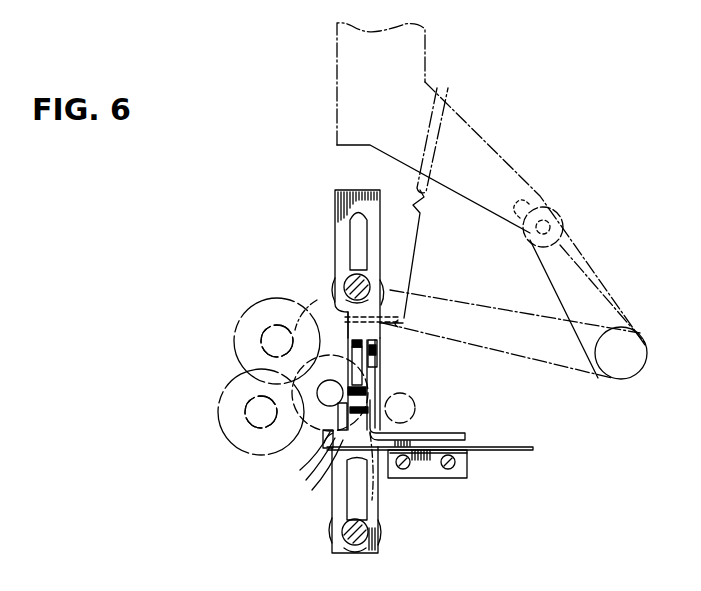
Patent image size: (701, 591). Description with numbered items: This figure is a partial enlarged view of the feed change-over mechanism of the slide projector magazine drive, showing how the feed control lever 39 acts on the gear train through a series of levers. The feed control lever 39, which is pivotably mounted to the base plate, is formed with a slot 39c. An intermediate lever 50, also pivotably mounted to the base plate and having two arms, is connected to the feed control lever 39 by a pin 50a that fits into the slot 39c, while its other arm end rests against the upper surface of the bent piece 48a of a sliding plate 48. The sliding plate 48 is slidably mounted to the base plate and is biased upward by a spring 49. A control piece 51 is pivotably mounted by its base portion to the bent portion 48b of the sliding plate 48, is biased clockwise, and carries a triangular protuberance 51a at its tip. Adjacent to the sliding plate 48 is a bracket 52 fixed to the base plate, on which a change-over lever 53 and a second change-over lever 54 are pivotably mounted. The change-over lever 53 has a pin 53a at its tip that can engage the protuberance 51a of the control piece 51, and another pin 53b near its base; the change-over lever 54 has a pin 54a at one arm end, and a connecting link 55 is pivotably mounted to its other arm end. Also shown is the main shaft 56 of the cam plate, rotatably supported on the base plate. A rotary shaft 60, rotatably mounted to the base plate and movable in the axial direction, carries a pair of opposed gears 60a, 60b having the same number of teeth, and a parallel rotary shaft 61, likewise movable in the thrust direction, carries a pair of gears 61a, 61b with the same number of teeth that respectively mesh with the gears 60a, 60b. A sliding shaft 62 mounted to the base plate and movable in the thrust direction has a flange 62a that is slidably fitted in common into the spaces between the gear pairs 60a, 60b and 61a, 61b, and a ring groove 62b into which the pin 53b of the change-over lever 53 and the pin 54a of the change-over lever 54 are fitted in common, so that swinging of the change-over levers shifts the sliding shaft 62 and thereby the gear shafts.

The feed control lever 39 is at (493, 156).
The slot 39c is at (527, 212).
The sliding plate 48 is at (334, 193).
The bent piece 48a is at (396, 324).
The bent portion 48b is at (370, 492).
The spring 49 is at (405, 262).
The intermediate lever 50 is at (580, 355).
The pin 50a is at (541, 230).
The control piece 51 is at (366, 470).
The triangular protuberance 51a is at (347, 337).
The bracket 52 is at (380, 350).
The change-over lever 53 is at (385, 364).
The pin 53a is at (386, 393).
The pin 53b is at (385, 373).
The change-over lever 54 is at (412, 463).
The pin 54a is at (318, 445).
The connecting link 55 is at (503, 446).
The main shaft 56 is at (414, 410).
The rotary shaft 60 is at (262, 338).
The gear 60a is at (258, 312).
The gear 60b is at (277, 341).
The rotary shaft 61 is at (250, 420).
The gear 61a is at (230, 395).
The gear 61b is at (261, 412).
The sliding shaft 62 is at (322, 440).
The flange 62a is at (318, 470).
The ring groove 62b is at (312, 455).